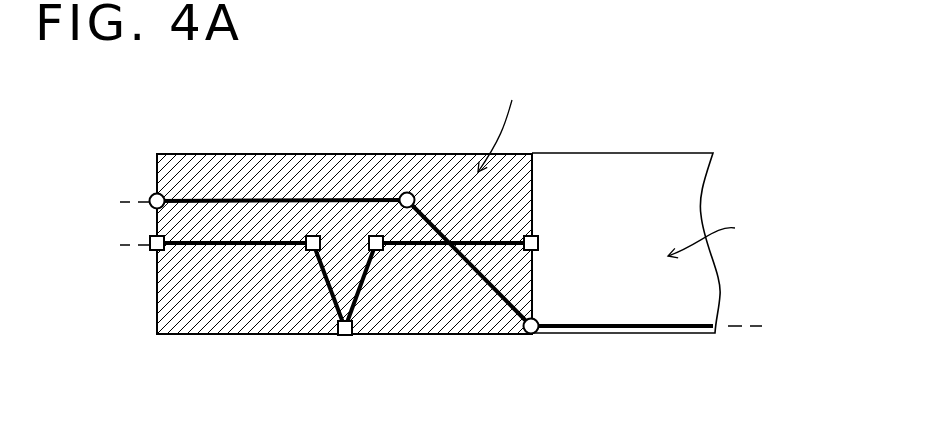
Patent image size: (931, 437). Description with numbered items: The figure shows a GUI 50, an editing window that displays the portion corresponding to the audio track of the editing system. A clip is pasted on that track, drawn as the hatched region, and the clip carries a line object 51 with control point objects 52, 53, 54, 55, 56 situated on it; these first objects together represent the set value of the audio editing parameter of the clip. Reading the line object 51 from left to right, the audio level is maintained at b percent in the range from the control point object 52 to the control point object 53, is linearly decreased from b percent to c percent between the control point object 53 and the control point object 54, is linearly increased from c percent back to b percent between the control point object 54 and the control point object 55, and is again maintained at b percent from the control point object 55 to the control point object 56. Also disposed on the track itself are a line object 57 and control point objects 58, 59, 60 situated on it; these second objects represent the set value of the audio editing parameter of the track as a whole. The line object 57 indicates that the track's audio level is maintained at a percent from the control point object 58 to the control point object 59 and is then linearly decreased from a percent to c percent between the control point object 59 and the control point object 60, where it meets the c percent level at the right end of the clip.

The GUI 50 is at (703, 135).
The line object 51 is at (220, 262).
The control point object 52 is at (151, 252).
The control point object 53 is at (310, 262).
The control point object 54 is at (345, 338).
The control point object 55 is at (380, 255).
The control point object 56 is at (541, 241).
The line object 57 is at (315, 200).
The control point object 58 is at (162, 195).
The control point object 59 is at (410, 194).
The control point object 60 is at (531, 335).